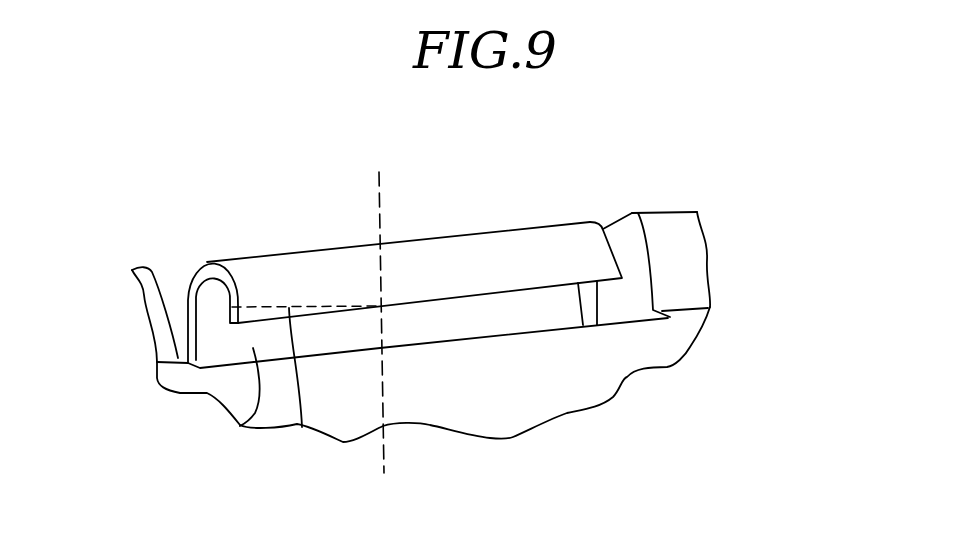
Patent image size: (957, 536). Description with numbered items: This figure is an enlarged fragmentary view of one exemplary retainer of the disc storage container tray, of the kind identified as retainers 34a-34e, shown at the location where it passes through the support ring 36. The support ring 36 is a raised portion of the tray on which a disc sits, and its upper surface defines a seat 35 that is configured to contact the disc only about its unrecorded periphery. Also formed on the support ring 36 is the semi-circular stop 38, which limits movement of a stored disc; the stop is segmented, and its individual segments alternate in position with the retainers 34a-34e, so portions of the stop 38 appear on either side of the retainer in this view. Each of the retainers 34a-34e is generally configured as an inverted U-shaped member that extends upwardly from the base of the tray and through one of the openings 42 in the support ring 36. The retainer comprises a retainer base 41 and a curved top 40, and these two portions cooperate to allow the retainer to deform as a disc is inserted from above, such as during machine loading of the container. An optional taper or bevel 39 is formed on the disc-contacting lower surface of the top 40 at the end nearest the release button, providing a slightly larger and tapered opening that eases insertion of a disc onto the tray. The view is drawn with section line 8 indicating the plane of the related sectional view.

The retainers 34a-34e is at (496, 175).
The curved top 40 is at (331, 263).
The semi-circular stop 38 is at (153, 283).
The seat 35 is at (680, 309).
The support ring 36 is at (488, 413).
The bevel 39 is at (302, 427).
The retainer base 41 is at (240, 426).
The openings 42 is at (492, 337).
The section line 8- 8 is at (379, 172).